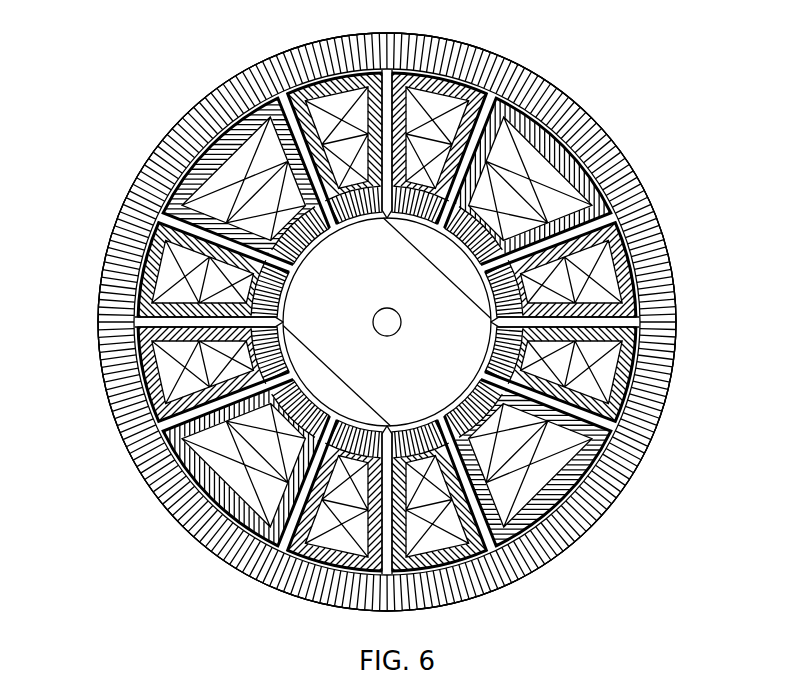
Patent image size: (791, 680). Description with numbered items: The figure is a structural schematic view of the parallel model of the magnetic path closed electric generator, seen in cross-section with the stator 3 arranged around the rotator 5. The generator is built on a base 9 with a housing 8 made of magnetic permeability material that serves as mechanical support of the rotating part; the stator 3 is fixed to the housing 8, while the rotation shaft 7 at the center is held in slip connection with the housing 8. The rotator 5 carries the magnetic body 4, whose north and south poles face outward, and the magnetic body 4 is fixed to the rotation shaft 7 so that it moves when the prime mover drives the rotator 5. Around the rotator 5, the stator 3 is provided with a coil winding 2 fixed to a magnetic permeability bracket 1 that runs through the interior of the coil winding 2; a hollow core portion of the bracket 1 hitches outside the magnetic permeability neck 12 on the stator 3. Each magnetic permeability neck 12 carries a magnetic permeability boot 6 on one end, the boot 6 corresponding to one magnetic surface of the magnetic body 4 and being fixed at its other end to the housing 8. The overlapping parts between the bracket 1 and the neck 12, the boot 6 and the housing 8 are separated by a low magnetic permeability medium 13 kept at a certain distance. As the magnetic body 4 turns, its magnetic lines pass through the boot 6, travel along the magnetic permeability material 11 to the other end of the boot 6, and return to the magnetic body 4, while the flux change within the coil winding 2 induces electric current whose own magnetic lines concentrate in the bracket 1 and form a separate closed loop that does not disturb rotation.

The magnetic permeability bracket 1 is at (147, 452).
The coil winding 2 is at (252, 575).
The stator 3 is at (330, 605).
The magnetic body 4 is at (423, 387).
The rotator 5 is at (437, 265).
The magnetic permeability boot 6 is at (593, 527).
The rotation shaft 7 is at (380, 323).
The housing 8 is at (606, 132).
The base 9 is at (648, 178).
The magnetic permeability material 11 is at (178, 503).
The magnetic permeability neck 12 is at (136, 322).
The low magnetic permeability medium 13 is at (129, 171).